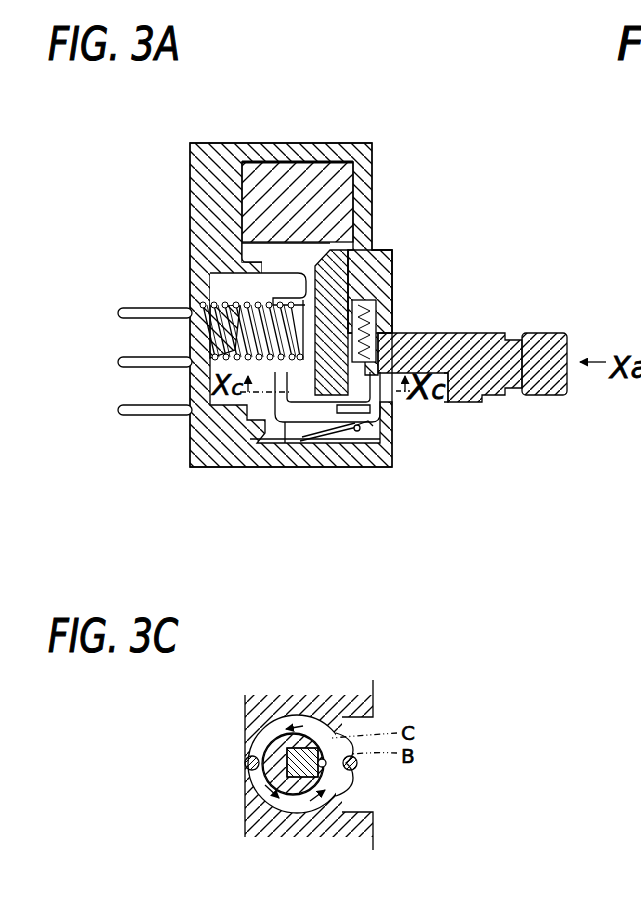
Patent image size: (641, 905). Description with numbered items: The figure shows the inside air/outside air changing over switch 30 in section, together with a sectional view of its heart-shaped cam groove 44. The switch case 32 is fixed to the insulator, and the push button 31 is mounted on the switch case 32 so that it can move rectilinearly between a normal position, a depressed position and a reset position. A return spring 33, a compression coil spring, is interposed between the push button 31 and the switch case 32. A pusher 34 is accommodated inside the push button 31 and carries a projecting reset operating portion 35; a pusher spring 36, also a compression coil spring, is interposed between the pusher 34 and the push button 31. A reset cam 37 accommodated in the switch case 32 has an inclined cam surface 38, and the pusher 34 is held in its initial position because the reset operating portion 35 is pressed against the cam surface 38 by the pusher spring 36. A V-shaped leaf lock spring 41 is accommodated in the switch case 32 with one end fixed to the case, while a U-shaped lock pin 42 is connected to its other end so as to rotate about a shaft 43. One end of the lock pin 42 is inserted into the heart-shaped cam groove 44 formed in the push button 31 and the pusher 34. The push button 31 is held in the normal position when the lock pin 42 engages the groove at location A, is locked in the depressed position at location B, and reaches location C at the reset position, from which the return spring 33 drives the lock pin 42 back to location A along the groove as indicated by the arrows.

In FIG. 3A, the inside air/outside air changing over switch 30 is at (187, 138).
In FIG. 3A, the push button 31 is at (550, 332).
In FIG. 3C, the push button 31 is at (357, 704).
In FIG. 3A, the switch case 32 is at (204, 467).
In FIG. 3A, the return spring 33 is at (205, 302).
In FIG. 3A, the pusher 34 is at (345, 293).
In FIG. 3C, the pusher 34 is at (305, 750).
In FIG. 3A, the reset operating portion 35 is at (351, 251).
In FIG. 3A, the pusher spring 36 is at (436, 335).
In FIG. 3A, the reset cam 37 is at (305, 176).
In FIG. 3A, the inclined cam surface 38 is at (260, 252).
In FIG. 3A, the lock spring 41 is at (334, 432).
In FIG. 3A, the lock pin 42 is at (288, 442).
In FIG. 3C, the lock pin 42 is at (246, 758).
In FIG. 3A, the shaft 43 is at (383, 468).
In FIG. 3C, the heart-shaped cam groove 44 is at (277, 722).